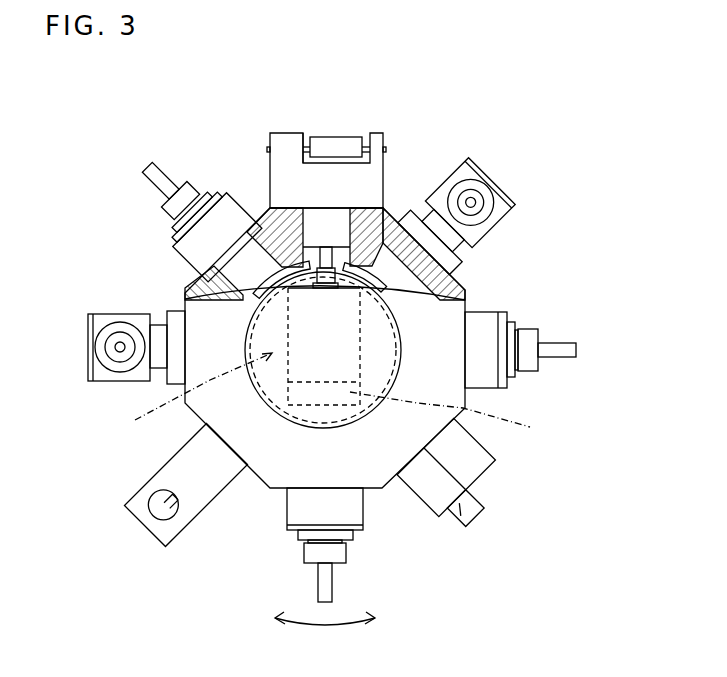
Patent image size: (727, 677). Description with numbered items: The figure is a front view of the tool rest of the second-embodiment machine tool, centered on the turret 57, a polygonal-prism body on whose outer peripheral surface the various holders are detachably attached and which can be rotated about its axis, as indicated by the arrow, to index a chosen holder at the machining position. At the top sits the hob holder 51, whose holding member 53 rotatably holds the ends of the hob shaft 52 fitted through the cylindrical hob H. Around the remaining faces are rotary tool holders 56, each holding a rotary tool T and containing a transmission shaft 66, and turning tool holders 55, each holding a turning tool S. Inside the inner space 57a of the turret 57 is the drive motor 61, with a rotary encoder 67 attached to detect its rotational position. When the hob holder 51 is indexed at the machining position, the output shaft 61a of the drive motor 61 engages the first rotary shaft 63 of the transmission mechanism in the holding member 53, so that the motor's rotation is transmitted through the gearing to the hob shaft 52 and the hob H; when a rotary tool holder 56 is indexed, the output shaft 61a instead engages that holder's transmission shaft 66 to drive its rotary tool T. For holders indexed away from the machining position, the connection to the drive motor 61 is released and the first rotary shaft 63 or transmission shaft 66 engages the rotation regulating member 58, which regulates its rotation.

The hob holder 51 is at (359, 137).
The hob shaft 52 is at (315, 129).
The holding member 53 is at (362, 164).
The turning tool holder 55 is at (353, 505).
The rotary tool holder 56 is at (299, 364).
The turret 57 is at (253, 348).
The inner space 57a is at (184, 392).
The rotation regulating member 58 is at (317, 299).
The drive motor 61 is at (411, 344).
The output shaft 61a is at (324, 345).
The first rotary shaft 63 is at (300, 257).
The transmission shaft 66 is at (287, 234).
The rotary encoder 67 is at (450, 414).
The hob H is at (336, 123).
The rotary tool T is at (332, 368).
The turning tool S is at (317, 517).